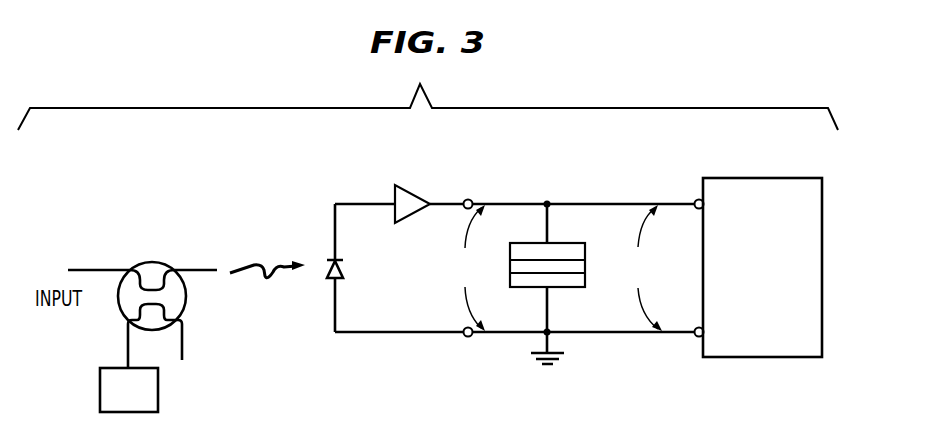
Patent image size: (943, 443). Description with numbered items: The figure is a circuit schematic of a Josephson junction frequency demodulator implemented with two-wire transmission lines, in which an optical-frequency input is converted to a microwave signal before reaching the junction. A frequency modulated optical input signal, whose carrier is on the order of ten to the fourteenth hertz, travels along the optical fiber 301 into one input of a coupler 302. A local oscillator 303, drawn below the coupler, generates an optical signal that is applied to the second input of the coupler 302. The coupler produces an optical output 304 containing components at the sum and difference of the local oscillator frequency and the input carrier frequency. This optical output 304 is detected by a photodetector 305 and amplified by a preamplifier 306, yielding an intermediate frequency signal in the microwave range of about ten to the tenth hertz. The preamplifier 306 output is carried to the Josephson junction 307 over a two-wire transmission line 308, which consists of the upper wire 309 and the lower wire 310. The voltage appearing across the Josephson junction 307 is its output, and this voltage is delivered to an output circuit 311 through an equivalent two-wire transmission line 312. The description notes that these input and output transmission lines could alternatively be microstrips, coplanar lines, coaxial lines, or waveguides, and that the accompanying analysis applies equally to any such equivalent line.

The optical fiber 301 is at (82, 269).
The coupler 302 is at (150, 262).
The local oscillator 303 is at (158, 396).
The optical output 304 is at (272, 262).
The photodetector 305 is at (328, 279).
The preamplifier 306 is at (396, 190).
The Josephson junction 307 is at (566, 289).
The two-wire transmission line 308 is at (468, 268).
The wire 309 is at (508, 200).
The wire 310 is at (498, 335).
The output circuit 311 is at (775, 358).
The two-wire transmission line 312 is at (642, 268).